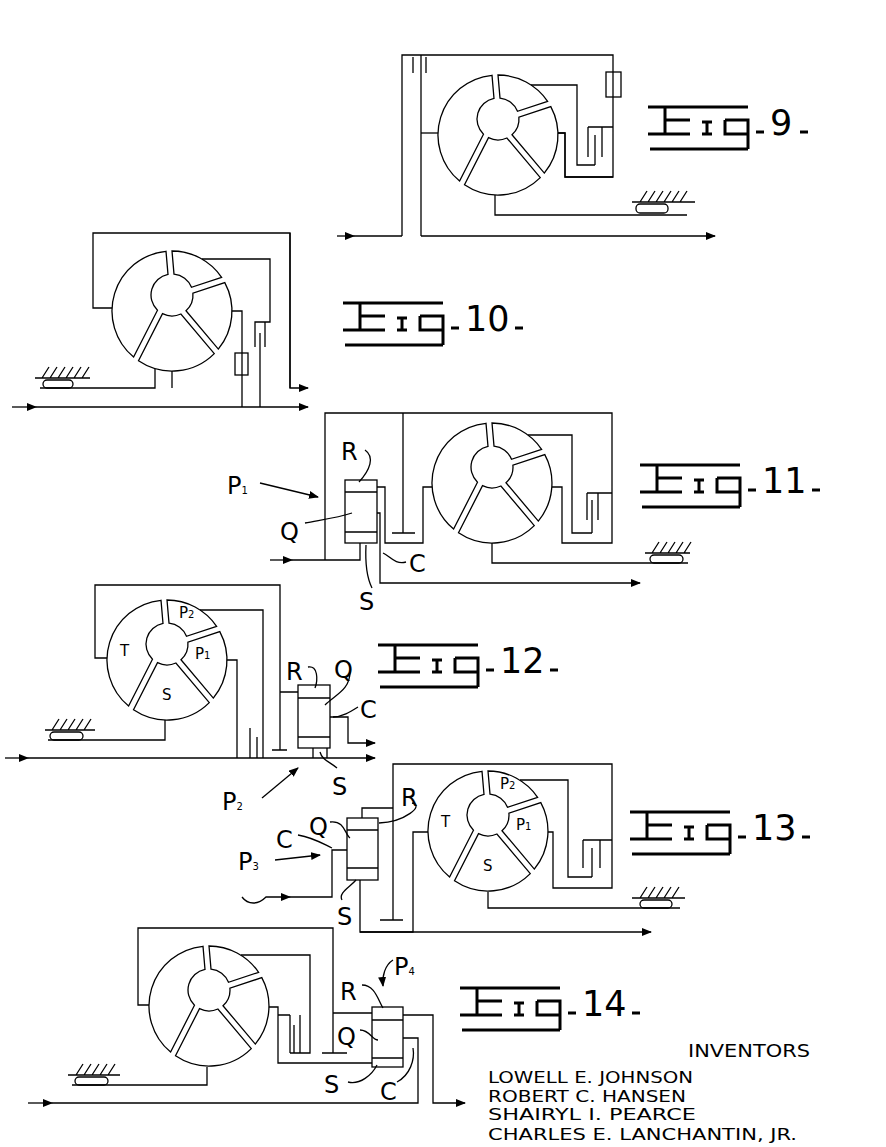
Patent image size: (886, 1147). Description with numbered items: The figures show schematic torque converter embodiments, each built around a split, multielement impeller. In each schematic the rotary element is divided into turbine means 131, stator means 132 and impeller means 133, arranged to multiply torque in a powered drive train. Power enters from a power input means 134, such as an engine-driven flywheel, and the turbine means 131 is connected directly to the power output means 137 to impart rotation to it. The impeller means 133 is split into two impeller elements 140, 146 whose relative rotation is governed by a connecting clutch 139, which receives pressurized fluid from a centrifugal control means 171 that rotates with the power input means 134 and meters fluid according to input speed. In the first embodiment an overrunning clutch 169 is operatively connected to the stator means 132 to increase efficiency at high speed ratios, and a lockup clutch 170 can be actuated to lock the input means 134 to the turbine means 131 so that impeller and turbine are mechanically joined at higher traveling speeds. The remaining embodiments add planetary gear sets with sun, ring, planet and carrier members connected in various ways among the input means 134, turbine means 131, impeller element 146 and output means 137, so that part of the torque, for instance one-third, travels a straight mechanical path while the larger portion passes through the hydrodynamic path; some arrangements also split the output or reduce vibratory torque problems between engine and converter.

In FIG. 9, the turbine means 131 is at (453, 176).
In FIG. 10, the turbine means 131 is at (125, 354).
In FIG. 11, the turbine means 131 is at (495, 472).
In FIG. 14, the turbine means 131 is at (158, 1021).
In FIG. 9, the stator means 132 is at (491, 208).
In FIG. 10, the stator means 132 is at (163, 386).
In FIG. 9, the impeller means 133 is at (562, 108).
In FIG. 9, the power input means 134 is at (388, 236).
In FIG. 10, the power input means 134 is at (80, 410).
In FIG. 11, the power input means 134 is at (310, 563).
In FIG. 12, the power input means 134 is at (64, 762).
In FIG. 13, the power input means 134 is at (269, 883).
In FIG. 14, the power input means 134 is at (140, 1107).
In FIG. 9, the power output means 137 is at (587, 238).
In FIG. 10, the power output means 137 is at (291, 362).
In FIG. 11, the power output means 137 is at (556, 586).
In FIG. 12, the power output means 137 is at (355, 740).
In FIG. 13, the power output means 137 is at (552, 932).
In FIG. 14, the power output means 137 is at (445, 1105).
In FIG. 9, the clutch 139 is at (623, 120).
In FIG. 10, the clutch 139 is at (274, 332).
In FIG. 11, the clutch 139 is at (596, 485).
In FIG. 12, the clutch 139 is at (252, 715).
In FIG. 13, the clutch 139 is at (598, 830).
In FIG. 9, the impeller element 140 is at (520, 81).
In FIG. 10, the impeller element 140 is at (178, 253).
In FIG. 11, the impeller element 140 is at (500, 427).
In FIG. 12, the impeller element 140 is at (172, 602).
In FIG. 13, the impeller element 140 is at (497, 772).
In FIG. 9, the impeller element 146 is at (547, 161).
In FIG. 10, the impeller element 146 is at (208, 343).
In FIG. 11, the impeller element 146 is at (534, 511).
In FIG. 12, the impeller element 146 is at (202, 695).
In FIG. 13, the impeller element 146 is at (530, 857).
In FIG. 14, the impeller element 146 is at (248, 1037).
In FIG. 9, the overrunning clutch 169 is at (694, 212).
In FIG. 11, the overrunning clutch 169 is at (697, 560).
In FIG. 9, the lockup clutch 170 is at (426, 50).
In FIG. 9, the centrifugal control means 171 is at (628, 71).
In FIG. 10, the centrifugal control means 171 is at (250, 385).